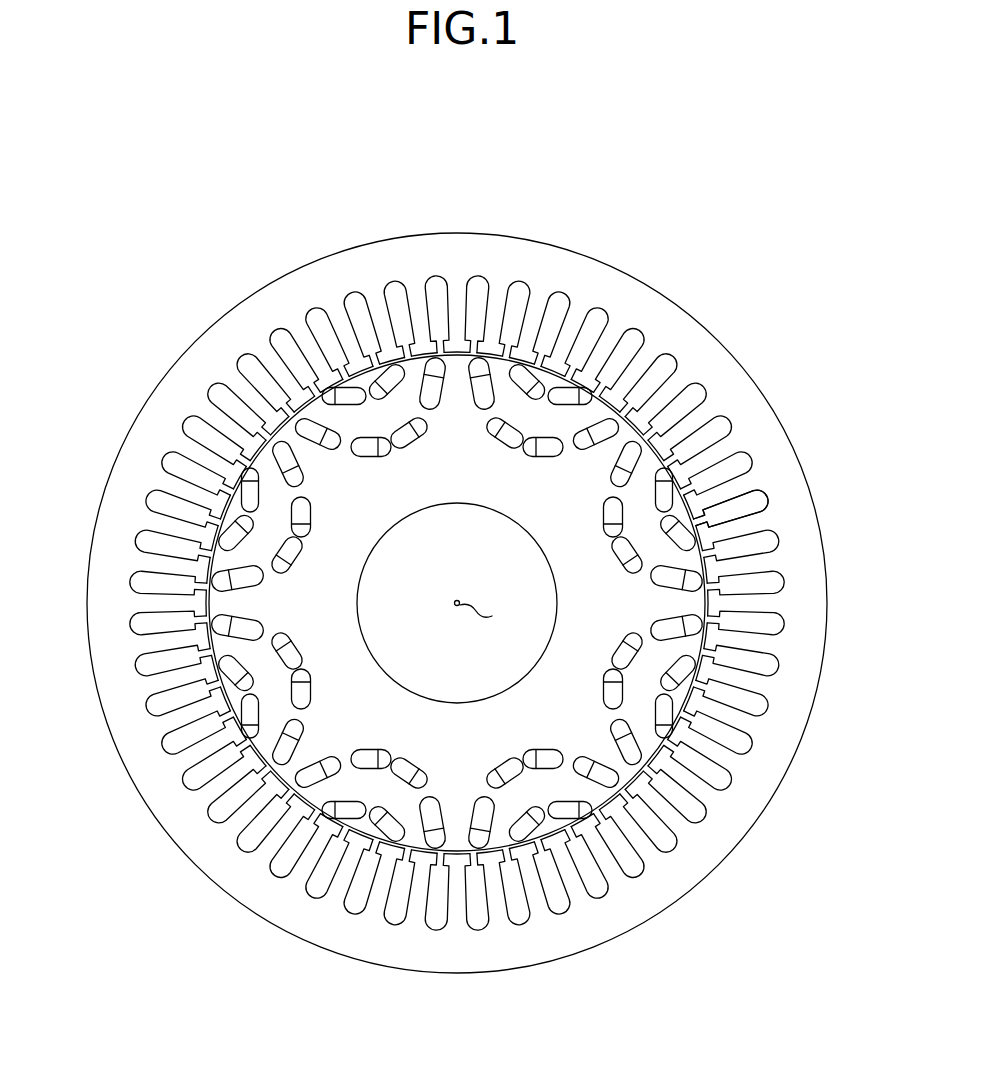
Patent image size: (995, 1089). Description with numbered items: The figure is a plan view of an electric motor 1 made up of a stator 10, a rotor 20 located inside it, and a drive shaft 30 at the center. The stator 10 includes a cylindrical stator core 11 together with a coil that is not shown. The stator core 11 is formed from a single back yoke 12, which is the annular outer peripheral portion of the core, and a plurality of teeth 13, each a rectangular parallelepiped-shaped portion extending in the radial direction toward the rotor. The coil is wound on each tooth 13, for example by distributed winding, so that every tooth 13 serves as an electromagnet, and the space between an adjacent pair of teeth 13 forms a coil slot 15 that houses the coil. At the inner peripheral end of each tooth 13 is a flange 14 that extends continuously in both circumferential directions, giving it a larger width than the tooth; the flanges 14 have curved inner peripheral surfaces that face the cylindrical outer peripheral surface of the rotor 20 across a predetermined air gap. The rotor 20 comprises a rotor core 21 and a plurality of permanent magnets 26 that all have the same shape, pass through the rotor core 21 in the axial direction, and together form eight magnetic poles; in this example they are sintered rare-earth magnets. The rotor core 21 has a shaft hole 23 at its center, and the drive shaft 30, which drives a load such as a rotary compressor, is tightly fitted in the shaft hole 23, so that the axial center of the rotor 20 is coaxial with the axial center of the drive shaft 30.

The electric motor 1 is at (486, 160).
The stator 10 is at (645, 310).
The stator core 11 is at (481, 607).
The back yoke 12 is at (303, 920).
The teeth 13 is at (337, 317).
The flanges 14 is at (320, 377).
The coil slot 15 is at (737, 507).
The rotor 20 is at (270, 740).
The rotor core 21 is at (457, 603).
The shaft hole 23 is at (457, 603).
The permanent magnets 26 is at (446, 452).
The drive shaft 30 is at (457, 672).